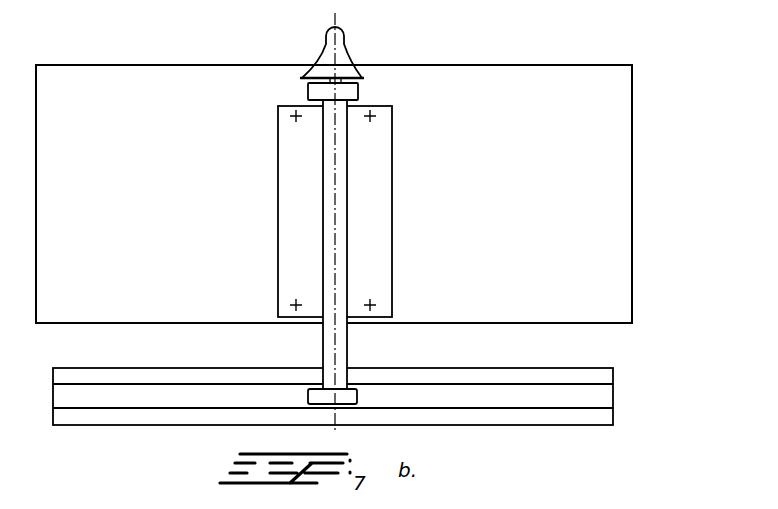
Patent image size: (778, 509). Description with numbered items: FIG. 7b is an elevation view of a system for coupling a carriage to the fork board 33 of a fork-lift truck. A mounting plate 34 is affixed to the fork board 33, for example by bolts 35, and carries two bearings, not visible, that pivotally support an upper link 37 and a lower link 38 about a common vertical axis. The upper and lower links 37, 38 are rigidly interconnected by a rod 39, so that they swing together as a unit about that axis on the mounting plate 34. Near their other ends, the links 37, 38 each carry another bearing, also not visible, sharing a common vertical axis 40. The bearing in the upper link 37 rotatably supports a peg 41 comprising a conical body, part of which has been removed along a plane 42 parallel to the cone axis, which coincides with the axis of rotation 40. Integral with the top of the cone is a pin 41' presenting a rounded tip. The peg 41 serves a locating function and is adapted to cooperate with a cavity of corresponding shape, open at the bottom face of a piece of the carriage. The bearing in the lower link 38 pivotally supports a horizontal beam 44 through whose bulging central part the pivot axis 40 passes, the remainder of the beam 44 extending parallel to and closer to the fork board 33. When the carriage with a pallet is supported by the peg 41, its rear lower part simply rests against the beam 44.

The fork board 33 is at (525, 73).
The mounting plate 34 is at (378, 167).
The bolts 35 is at (370, 118).
The upper link 37 is at (355, 92).
The lower link 38 is at (357, 395).
The rod 39 is at (342, 206).
The vertical axis 40 is at (337, 14).
The peg 41 is at (317, 54).
The pin 41' is at (290, 24).
The plane 42 is at (343, 63).
The horizontal beam 44 is at (159, 390).